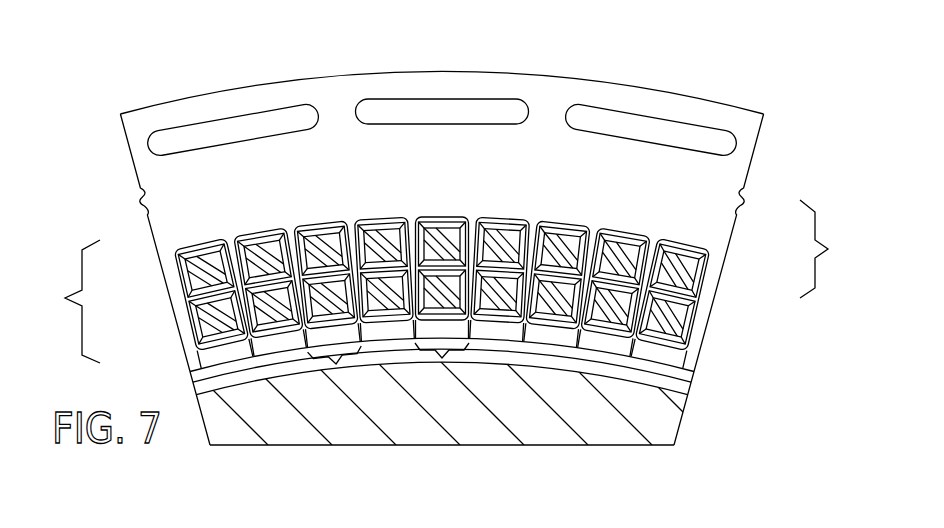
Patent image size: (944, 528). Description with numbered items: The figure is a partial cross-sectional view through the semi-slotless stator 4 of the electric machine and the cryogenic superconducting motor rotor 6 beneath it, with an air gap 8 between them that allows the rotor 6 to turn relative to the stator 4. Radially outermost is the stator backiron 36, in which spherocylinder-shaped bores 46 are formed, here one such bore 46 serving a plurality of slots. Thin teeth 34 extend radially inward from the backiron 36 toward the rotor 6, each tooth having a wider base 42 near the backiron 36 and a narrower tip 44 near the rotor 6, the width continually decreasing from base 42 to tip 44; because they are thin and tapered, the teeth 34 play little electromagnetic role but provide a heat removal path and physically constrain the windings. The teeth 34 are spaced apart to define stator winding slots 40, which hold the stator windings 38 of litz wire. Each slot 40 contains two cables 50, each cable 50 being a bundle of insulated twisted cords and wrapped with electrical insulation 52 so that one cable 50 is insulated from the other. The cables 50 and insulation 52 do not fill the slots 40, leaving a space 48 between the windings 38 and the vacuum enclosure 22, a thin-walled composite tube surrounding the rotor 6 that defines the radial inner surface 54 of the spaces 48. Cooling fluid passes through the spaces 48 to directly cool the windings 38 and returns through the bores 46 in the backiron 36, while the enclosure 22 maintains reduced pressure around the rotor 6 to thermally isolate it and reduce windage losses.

The semi-slotless stator 4 is at (758, 41).
The superconducting motor rotor 6 is at (598, 422).
The air gap 8 is at (678, 385).
The vacuum enclosure 22 is at (683, 375).
The teeth 34 is at (298, 333).
The stator backiron 36 is at (707, 182).
The stator windings 38 is at (450, 281).
The stator winding slots 40 is at (336, 364).
The base 42 is at (280, 228).
The tip 44 is at (523, 345).
The bores 46 is at (398, 117).
The space 48 is at (655, 353).
The cable 50 is at (265, 308).
The electrical insulation 52 is at (562, 222).
The radial inner surface 54 is at (497, 338).